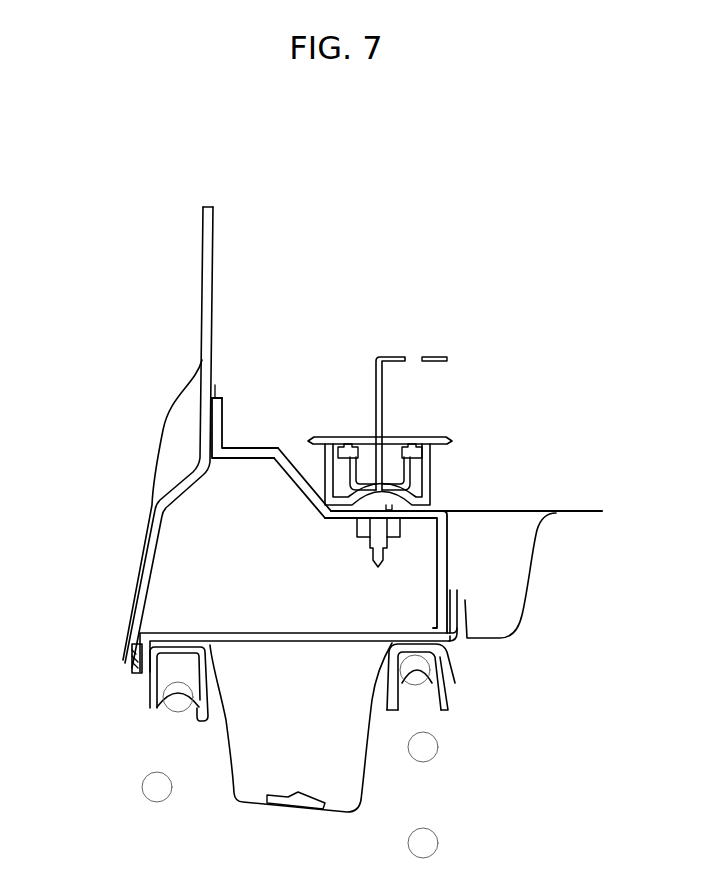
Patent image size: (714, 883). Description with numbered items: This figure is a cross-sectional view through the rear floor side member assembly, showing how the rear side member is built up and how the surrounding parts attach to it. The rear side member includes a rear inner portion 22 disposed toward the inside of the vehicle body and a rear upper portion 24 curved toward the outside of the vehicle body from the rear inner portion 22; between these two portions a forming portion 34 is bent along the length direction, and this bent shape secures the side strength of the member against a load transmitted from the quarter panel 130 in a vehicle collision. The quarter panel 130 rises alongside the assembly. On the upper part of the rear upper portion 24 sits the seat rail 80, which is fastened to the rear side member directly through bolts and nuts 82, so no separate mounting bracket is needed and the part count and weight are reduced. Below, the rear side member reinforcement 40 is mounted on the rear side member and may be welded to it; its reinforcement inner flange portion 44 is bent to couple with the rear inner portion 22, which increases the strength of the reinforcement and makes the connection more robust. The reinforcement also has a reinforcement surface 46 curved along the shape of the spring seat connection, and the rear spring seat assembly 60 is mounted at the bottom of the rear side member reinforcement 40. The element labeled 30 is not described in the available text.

The quarter panel 130 is at (203, 333).
The bracket 30 is at (222, 420).
The forming portion 34 is at (273, 445).
The seat rail 80 is at (432, 463).
The rear upper portion 24 is at (431, 509).
The bolts and nuts 82 is at (400, 531).
The rear inner portion 22 is at (447, 565).
The reinforcement inner flange portion 44 is at (467, 603).
The reinforcement surface 46 is at (140, 655).
The rear spring seat assembly 60 is at (125, 710).
The rear side member reinforcement 40 is at (277, 652).